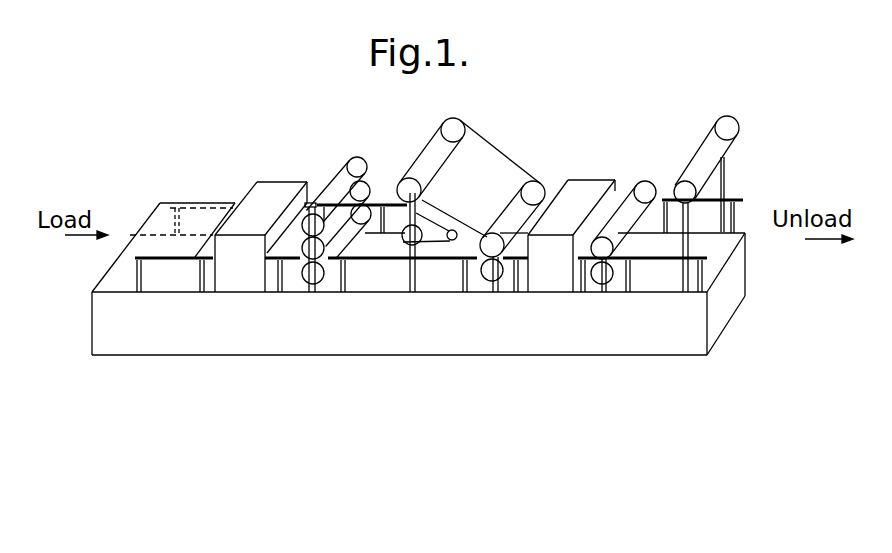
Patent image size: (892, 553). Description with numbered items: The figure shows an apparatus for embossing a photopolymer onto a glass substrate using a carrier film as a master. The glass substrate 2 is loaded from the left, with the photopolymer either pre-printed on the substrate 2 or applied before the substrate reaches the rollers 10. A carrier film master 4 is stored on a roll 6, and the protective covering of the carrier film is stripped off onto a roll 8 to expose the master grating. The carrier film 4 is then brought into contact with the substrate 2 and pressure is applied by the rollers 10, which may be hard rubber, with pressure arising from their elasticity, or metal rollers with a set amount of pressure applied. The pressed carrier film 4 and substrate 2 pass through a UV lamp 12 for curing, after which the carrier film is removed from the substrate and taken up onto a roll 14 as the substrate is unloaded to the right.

The glass substrate 2 is at (157, 220).
The carrier film master 4 is at (480, 155).
The roll 6 is at (435, 138).
The roll 8 is at (403, 242).
The rollers 10 is at (533, 182).
The UV lamp 12 is at (593, 182).
The roll 14 is at (725, 140).